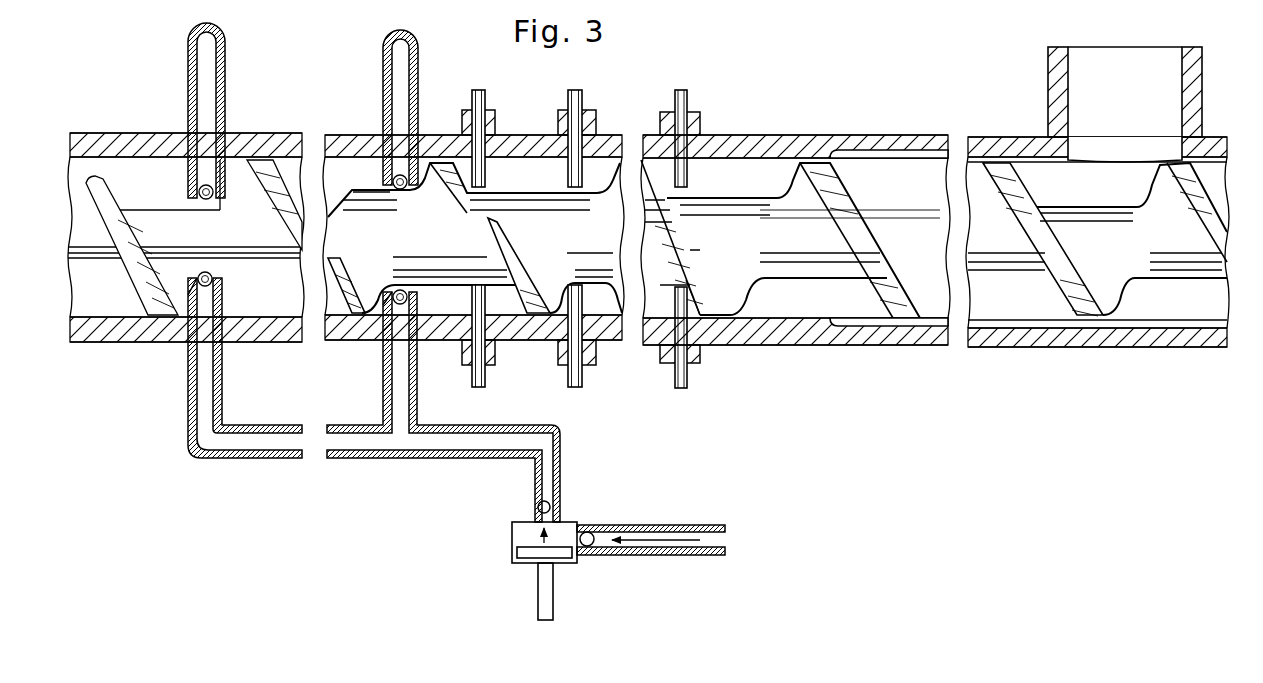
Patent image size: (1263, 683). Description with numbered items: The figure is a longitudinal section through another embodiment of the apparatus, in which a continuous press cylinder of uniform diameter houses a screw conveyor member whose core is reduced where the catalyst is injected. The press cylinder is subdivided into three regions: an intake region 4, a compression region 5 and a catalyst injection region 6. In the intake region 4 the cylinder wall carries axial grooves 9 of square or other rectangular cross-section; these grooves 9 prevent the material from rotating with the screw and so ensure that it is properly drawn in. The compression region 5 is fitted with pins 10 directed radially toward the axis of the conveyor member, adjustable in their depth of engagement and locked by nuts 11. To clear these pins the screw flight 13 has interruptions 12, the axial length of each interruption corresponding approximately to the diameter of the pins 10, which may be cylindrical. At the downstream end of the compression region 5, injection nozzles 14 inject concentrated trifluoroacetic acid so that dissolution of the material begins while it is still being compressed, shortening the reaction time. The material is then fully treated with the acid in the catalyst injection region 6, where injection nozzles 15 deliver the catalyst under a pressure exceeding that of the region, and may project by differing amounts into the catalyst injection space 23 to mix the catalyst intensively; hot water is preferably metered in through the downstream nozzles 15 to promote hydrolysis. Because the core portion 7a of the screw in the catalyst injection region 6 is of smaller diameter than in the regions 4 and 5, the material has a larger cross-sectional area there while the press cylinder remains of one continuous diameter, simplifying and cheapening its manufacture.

The intake region 4 is at (771, 625).
The compression region 5 is at (705, 625).
The catalyst injection region 6 is at (336, 625).
The core portion 7a is at (167, 177).
The axial grooves 9 is at (882, 152).
The pins 10 is at (680, 93).
The nuts 11 is at (695, 115).
The interruptions 12 is at (473, 215).
The screw flight 13 is at (896, 318).
The injection nozzles 14 is at (403, 52).
The injection nozzles 15 is at (208, 45).
The catalyst injection space 23 is at (255, 305).